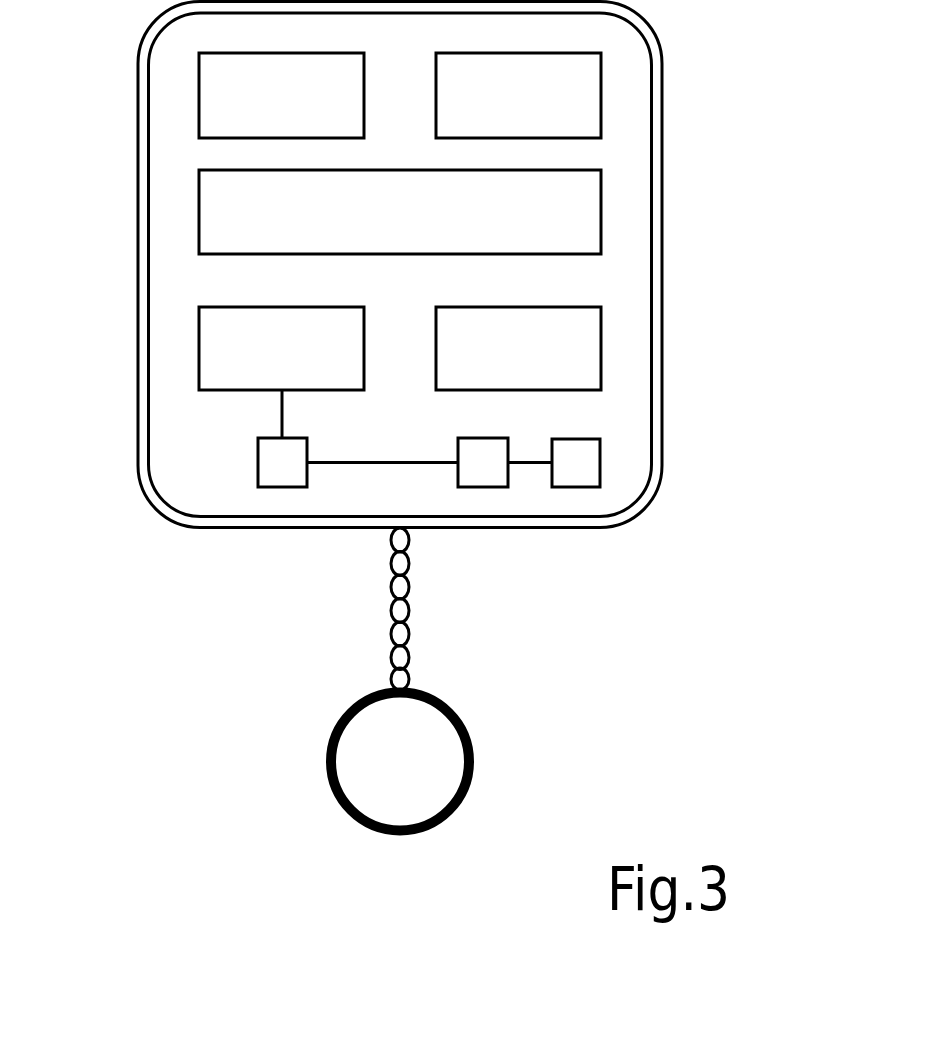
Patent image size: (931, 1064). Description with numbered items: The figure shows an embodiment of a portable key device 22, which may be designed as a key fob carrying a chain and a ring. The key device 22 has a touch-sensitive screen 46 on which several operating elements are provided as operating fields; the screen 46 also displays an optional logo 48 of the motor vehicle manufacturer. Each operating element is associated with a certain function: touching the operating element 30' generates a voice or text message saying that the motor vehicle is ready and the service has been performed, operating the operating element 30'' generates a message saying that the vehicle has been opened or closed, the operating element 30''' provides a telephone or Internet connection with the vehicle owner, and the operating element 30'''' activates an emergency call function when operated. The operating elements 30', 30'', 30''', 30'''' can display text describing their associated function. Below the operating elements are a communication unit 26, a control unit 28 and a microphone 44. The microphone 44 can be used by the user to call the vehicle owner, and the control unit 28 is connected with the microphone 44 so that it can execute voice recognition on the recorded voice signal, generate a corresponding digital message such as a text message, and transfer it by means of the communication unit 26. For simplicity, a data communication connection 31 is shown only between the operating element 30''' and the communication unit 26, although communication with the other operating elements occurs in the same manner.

The key device 22 is at (662, 313).
The touch-sensitive screen 46 is at (662, 80).
The operating element 30' is at (205, 99).
The operating element 30'' is at (604, 102).
The operating element 30''' is at (203, 353).
The operating element 30'''' is at (613, 355).
The logo 48 is at (602, 207).
The data communication connection 31 is at (283, 424).
The communication unit 26 is at (278, 488).
The control unit 28 is at (482, 488).
The microphone 44 is at (601, 463).